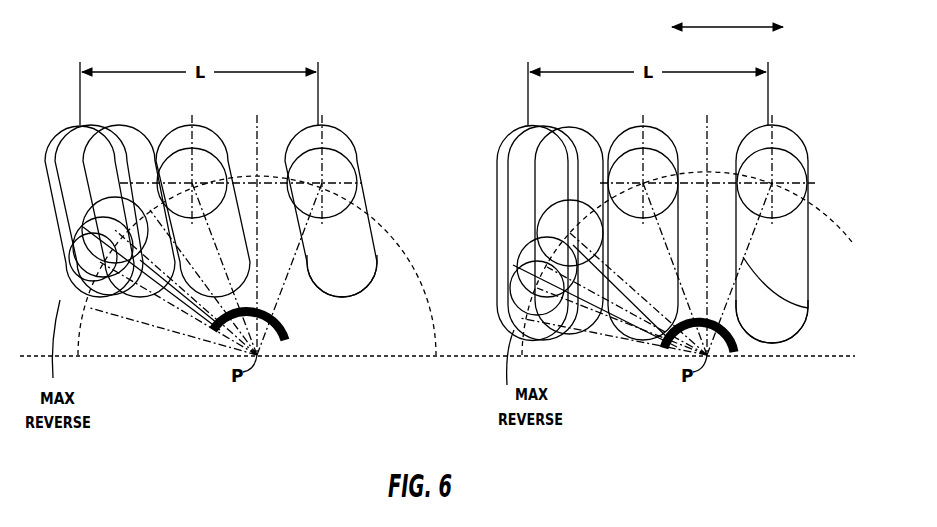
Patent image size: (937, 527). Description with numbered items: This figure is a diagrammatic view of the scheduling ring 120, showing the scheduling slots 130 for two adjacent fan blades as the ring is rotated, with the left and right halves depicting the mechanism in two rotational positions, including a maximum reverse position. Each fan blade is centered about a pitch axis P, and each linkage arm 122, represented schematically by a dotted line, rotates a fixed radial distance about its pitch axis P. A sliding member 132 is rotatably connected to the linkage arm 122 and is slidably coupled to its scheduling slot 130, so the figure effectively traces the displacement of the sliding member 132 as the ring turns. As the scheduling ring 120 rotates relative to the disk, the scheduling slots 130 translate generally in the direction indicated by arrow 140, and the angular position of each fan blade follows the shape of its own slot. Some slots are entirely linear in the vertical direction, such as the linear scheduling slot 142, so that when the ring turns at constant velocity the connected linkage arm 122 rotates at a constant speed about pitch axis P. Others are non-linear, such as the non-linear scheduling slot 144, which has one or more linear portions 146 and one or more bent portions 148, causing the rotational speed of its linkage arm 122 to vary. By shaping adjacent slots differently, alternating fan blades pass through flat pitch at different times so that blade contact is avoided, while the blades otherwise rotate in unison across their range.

The scheduling ring 120 is at (796, 188).
The linkage arm 122 is at (807, 306).
The scheduling slot 130 is at (796, 128).
The sliding member 132 is at (790, 172).
The arrow 140 is at (728, 27).
The linear scheduling slot 142 is at (812, 285).
The non-linear scheduling slot 144 is at (352, 127).
The linear portion 146 is at (357, 158).
The bent portion 148 is at (362, 195).